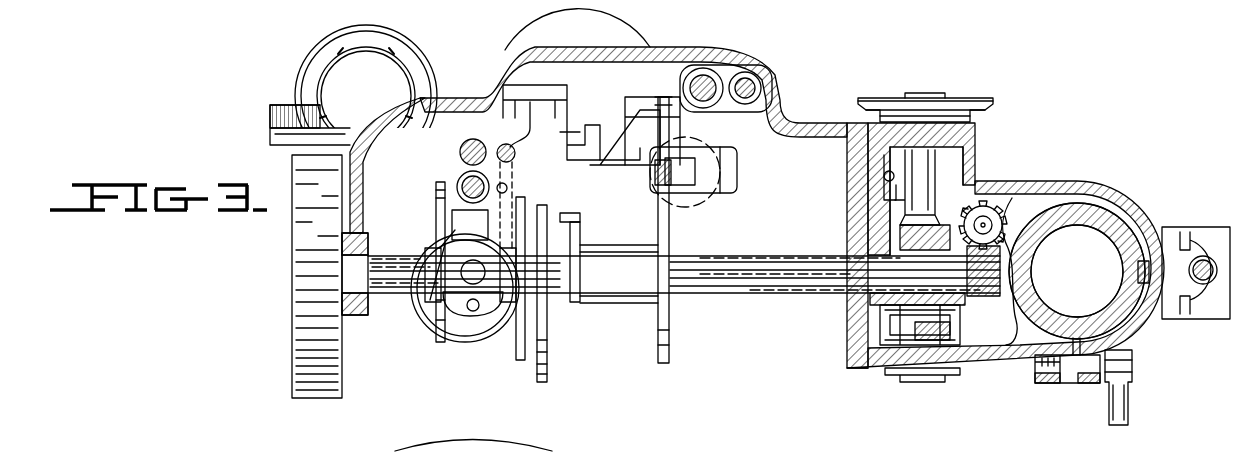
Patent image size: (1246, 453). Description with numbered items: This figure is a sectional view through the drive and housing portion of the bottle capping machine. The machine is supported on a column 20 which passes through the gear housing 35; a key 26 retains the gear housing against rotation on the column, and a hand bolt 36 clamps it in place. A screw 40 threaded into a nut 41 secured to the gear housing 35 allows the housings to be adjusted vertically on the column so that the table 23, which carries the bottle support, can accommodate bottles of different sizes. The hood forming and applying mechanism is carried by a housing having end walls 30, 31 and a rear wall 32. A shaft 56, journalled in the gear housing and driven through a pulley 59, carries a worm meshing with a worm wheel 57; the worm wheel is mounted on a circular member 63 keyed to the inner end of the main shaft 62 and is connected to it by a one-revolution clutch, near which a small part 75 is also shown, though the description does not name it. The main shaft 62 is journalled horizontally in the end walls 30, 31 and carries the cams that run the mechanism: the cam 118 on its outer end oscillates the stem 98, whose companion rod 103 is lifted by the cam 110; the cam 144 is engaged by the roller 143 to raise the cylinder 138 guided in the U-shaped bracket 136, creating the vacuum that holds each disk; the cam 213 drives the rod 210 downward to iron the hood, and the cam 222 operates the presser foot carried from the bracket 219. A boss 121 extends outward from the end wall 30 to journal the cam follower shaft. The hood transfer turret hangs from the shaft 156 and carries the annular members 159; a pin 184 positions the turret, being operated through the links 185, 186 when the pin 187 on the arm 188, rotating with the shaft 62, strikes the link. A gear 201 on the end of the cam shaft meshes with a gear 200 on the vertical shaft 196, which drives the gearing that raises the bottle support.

The column 20 is at (1045, 320).
The table 23 is at (505, 446).
The key 26 is at (1137, 272).
The end wall 30 is at (362, 212).
The end wall 31 is at (852, 206).
The rear wall 32 is at (672, 50).
The gear housing 35 is at (995, 368).
The hand bolt 36 is at (1134, 398).
The screw 40 is at (1205, 285).
The nut 41 is at (1196, 258).
The shaft 56 is at (942, 173).
The worm wheel 57 is at (932, 343).
The pulley 59 is at (972, 100).
The shaft 62 is at (760, 294).
The circular member 63 is at (958, 302).
The pin 75 is at (884, 176).
The stem 98 is at (717, 70).
The rod 103 is at (755, 76).
The cam 110 is at (548, 347).
The cam 118 is at (298, 235).
The boss 121 is at (278, 116).
The U-shaped bracket 136 is at (737, 172).
The cylinder 138 is at (702, 204).
The roller 143 is at (655, 180).
The cam 144 is at (670, 234).
The shaft 156 is at (460, 151).
The annular member 159 is at (405, 51).
The pin 184 is at (516, 153).
The link 185 is at (548, 121).
The link 186 is at (560, 134).
The pin 187 is at (565, 213).
The arm 188 is at (580, 238).
The shaft 196 is at (1005, 220).
The gear 200 is at (992, 222).
The gear 201 is at (1000, 268).
The rod 210 is at (457, 185).
The cam 213 is at (516, 344).
The bracket 219 is at (511, 196).
The cam 222 is at (436, 205).